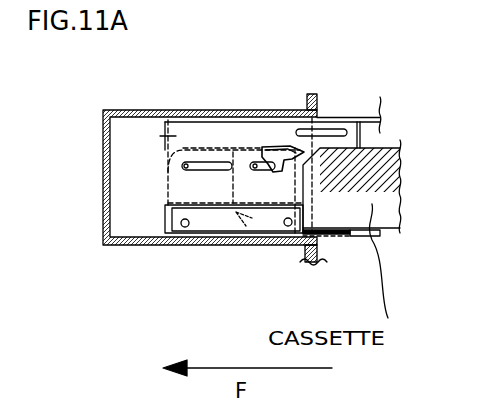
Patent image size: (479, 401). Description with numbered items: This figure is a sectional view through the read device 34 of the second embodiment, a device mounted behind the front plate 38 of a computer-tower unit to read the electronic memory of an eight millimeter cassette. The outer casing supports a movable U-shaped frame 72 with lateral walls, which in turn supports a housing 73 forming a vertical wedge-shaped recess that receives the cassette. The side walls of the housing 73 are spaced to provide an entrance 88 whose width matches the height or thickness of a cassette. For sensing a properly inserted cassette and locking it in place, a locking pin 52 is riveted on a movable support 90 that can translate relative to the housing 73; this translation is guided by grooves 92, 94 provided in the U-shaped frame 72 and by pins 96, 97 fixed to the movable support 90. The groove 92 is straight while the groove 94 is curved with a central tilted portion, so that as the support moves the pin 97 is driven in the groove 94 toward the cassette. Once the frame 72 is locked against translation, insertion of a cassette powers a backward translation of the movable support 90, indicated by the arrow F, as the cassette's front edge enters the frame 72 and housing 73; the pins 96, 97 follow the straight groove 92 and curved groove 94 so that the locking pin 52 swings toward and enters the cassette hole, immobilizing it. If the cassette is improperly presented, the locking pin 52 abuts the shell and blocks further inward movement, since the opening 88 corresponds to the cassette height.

The read device 34 is at (101, 181).
The front plate 38 is at (317, 104).
The locking pin 52 is at (287, 109).
The U-shaped frame 72 is at (165, 120).
The housing 73 is at (246, 232).
The entrance 88 is at (320, 200).
The movable support 90 is at (217, 150).
The straight groove 92 is at (215, 172).
The curved groove 94 is at (263, 175).
The pin 96 is at (187, 163).
The pin 97 is at (253, 163).